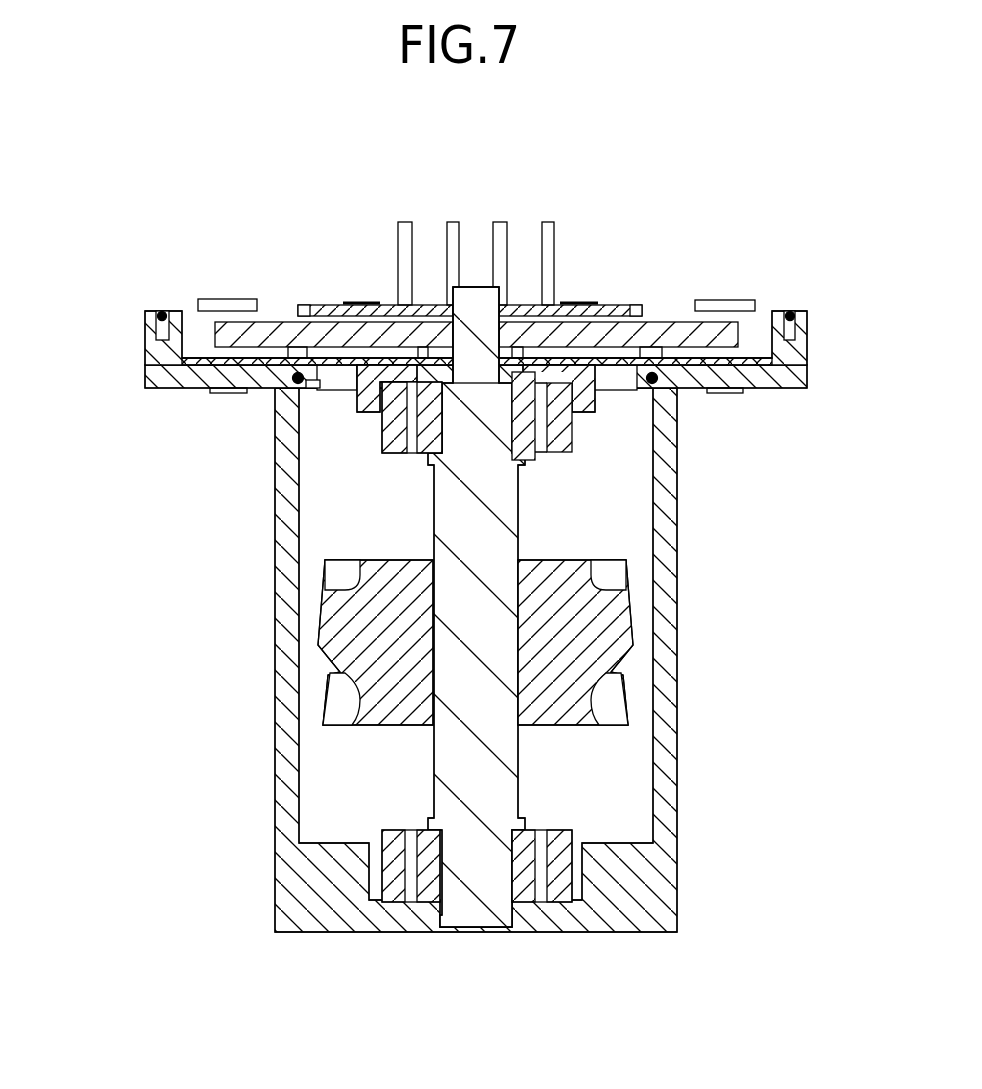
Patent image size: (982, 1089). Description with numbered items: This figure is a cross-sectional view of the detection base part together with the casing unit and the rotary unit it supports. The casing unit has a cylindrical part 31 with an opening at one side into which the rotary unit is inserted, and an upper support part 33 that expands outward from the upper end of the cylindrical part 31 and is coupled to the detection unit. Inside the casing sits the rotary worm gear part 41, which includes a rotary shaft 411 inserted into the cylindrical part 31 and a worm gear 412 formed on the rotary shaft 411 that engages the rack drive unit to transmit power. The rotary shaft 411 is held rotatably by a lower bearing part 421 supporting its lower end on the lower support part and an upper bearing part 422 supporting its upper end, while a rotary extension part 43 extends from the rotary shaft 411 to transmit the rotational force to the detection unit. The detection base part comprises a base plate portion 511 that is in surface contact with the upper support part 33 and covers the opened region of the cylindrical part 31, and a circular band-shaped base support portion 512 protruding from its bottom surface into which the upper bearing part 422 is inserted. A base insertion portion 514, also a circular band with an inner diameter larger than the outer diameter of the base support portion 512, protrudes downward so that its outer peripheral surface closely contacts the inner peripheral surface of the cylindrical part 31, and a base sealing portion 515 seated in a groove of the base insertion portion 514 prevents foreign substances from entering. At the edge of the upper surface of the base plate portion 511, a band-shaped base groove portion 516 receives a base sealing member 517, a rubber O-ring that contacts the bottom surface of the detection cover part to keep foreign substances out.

The cylindrical part 31 is at (290, 780).
The upper support part 33 is at (800, 372).
The rotary worm gear part 41 is at (581, 607).
The rotary shaft 411 is at (610, 700).
The worm gear 412 is at (478, 773).
The lower bearing part 421 is at (580, 870).
The upper bearing part 422 is at (560, 437).
The rotary extension part 43 is at (473, 306).
The base plate portion 511 is at (165, 358).
The base support portion 512 is at (367, 402).
The base insertion portion 514 is at (312, 386).
The base sealing portion 515 is at (297, 380).
The base groove portion 516 is at (165, 332).
The base sealing member 517 is at (163, 309).